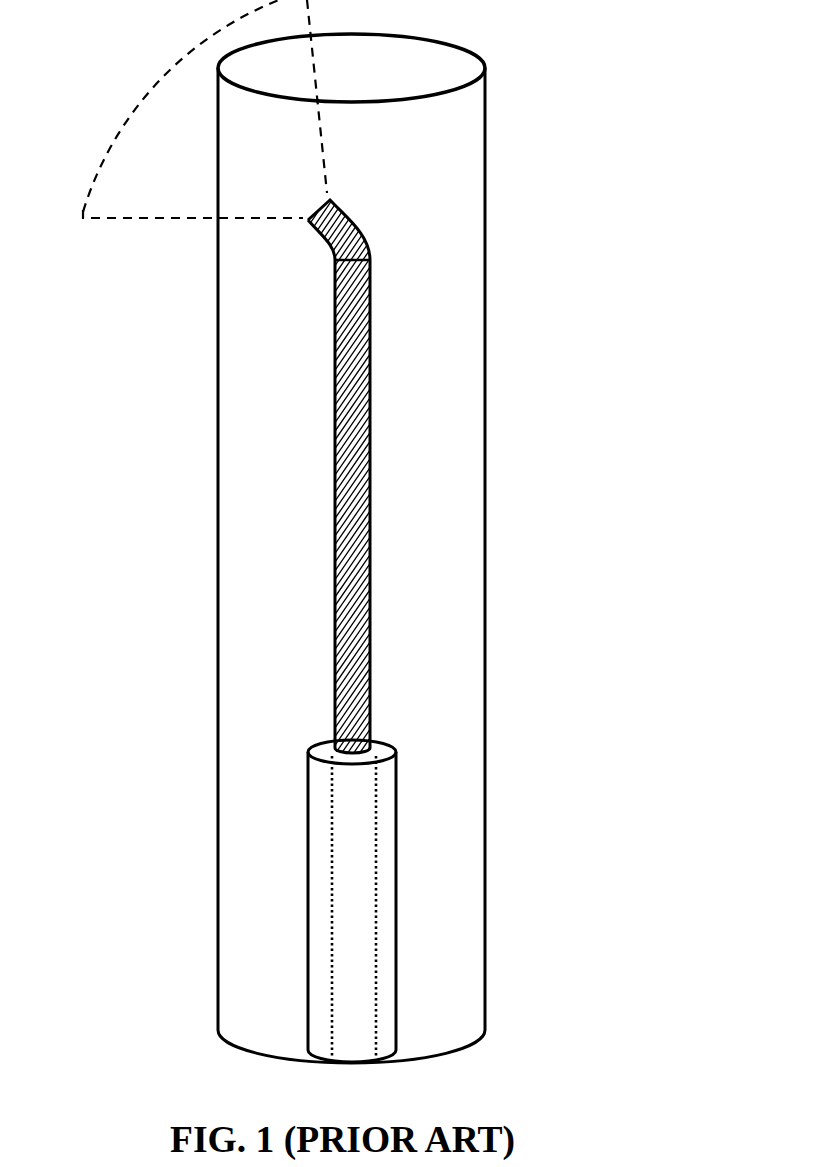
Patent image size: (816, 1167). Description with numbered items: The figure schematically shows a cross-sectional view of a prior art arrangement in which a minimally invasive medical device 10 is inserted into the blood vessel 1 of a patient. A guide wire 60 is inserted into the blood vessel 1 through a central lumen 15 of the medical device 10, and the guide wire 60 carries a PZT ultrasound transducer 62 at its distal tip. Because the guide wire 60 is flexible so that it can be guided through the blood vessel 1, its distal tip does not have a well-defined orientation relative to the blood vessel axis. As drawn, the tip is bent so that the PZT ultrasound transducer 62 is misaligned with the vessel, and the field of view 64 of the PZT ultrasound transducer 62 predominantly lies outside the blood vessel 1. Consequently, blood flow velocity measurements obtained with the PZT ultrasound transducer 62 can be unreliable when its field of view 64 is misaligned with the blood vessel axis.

The blood vessel 1 is at (485, 848).
The medical device 10 is at (328, 918).
The central lumen 15 is at (362, 850).
The guide wire 60 is at (370, 418).
The PZT ultrasound transducer 62 is at (337, 207).
The field of view 64 is at (145, 202).